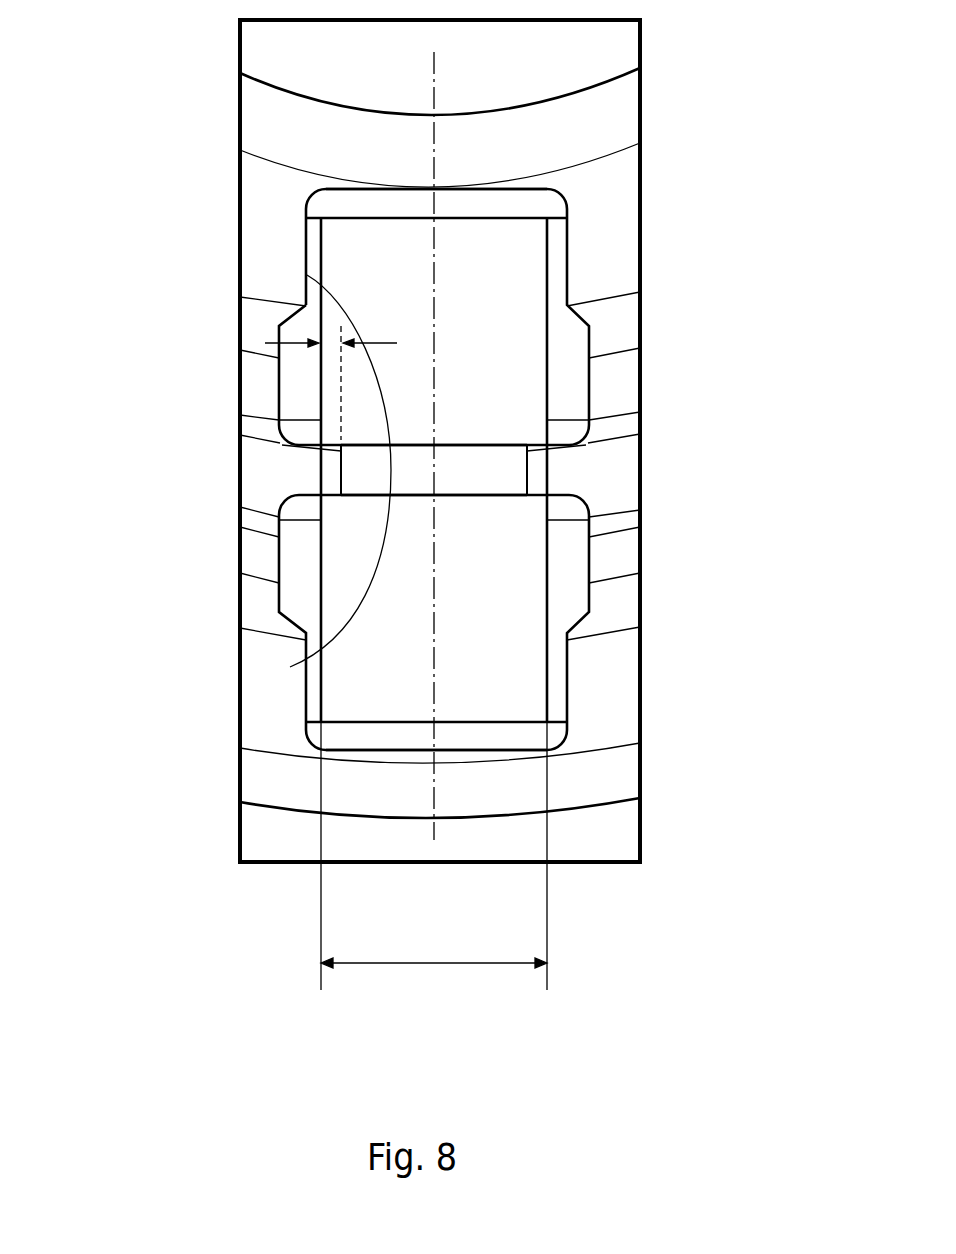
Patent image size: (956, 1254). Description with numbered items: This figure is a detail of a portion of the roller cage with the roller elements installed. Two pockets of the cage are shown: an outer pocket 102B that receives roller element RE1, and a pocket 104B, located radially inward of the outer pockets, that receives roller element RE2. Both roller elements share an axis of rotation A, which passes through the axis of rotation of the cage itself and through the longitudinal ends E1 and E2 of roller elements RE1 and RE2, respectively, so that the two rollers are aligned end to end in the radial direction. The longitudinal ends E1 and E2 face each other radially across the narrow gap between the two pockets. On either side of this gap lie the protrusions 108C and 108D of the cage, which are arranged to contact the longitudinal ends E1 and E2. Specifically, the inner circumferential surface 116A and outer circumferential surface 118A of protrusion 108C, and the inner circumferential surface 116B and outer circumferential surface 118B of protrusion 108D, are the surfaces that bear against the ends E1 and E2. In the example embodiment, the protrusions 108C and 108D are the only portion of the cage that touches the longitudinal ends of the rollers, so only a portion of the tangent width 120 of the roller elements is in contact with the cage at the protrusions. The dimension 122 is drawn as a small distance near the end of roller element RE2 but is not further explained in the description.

The axis of rotation A is at (434, 73).
The pocket 102B is at (572, 682).
The pocket 104B is at (572, 249).
The protrusion 108C is at (545, 478).
The protrusion 108D is at (300, 470).
The inner circumferential surface 116A is at (570, 438).
The inner circumferential surface 116B is at (300, 440).
The outer circumferential surface 118A is at (580, 500).
The outer circumferential surface 118B is at (306, 499).
The roller element RE1 is at (487, 747).
The roller element RE2 is at (345, 205).
The longitudinal end E1 is at (290, 667).
The longitudinal end E2 is at (307, 275).
The tangent width 120 is at (414, 963).
The wall thickness 122 is at (292, 342).